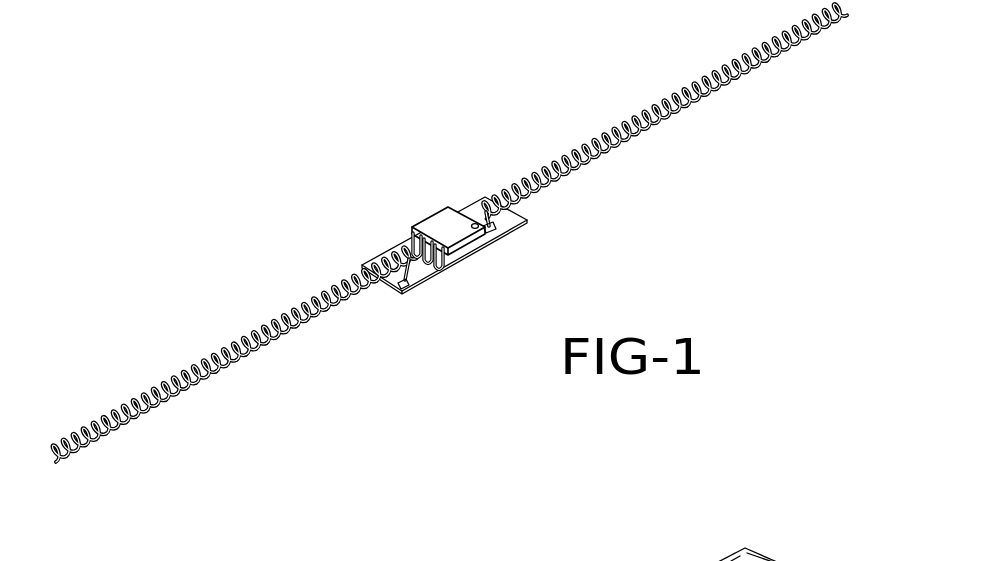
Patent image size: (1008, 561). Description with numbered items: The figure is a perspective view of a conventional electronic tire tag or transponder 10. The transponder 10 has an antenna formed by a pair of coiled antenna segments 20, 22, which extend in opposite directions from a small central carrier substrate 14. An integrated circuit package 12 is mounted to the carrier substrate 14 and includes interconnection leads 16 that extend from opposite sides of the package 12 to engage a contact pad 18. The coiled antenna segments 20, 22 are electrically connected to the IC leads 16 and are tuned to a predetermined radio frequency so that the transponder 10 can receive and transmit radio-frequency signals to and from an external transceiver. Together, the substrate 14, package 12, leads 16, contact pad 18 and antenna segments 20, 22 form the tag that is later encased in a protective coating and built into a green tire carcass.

The electronic tire tag or transponder 10 is at (447, 231).
The integrated circuit package 12 is at (422, 208).
The carrier substrate 14 is at (513, 250).
The interconnection leads 16 is at (440, 272).
The contact pad 18 is at (407, 281).
The coiled antenna segment 20 is at (238, 385).
The coiled antenna segment 22 is at (592, 175).